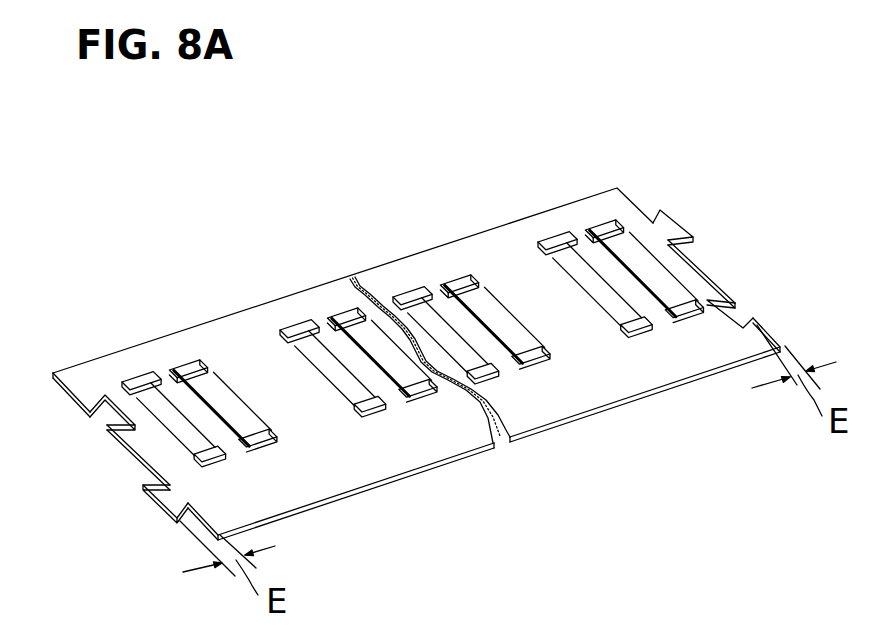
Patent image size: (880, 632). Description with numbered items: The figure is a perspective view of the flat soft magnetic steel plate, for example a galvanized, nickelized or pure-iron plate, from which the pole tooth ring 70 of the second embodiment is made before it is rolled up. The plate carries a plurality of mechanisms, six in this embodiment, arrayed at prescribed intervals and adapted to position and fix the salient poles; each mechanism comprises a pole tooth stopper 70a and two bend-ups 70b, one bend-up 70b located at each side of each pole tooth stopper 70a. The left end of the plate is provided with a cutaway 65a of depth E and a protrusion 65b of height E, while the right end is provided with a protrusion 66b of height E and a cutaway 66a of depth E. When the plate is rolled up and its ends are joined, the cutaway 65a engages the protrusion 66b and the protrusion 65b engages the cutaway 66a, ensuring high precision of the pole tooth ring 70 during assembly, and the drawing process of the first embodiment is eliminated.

The pole tooth ring 70 is at (364, 192).
The pole tooth stopper 70a is at (177, 423).
The bend-up 70b is at (128, 392).
The cutaway 65a is at (105, 417).
The protrusion 65b is at (167, 497).
The cutaway 66a is at (737, 313).
The protrusion 66b is at (668, 227).